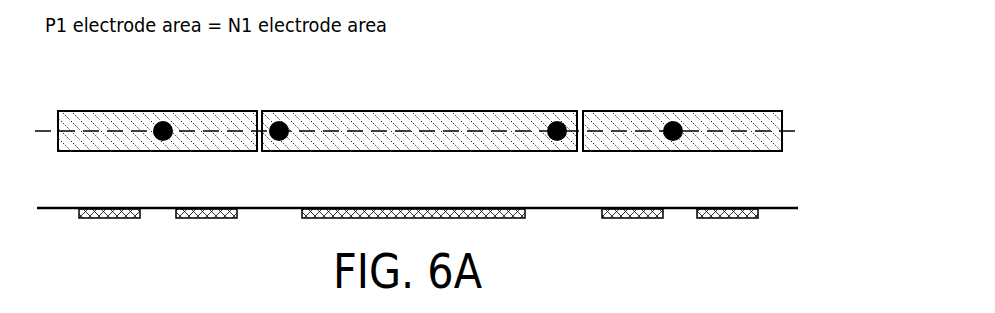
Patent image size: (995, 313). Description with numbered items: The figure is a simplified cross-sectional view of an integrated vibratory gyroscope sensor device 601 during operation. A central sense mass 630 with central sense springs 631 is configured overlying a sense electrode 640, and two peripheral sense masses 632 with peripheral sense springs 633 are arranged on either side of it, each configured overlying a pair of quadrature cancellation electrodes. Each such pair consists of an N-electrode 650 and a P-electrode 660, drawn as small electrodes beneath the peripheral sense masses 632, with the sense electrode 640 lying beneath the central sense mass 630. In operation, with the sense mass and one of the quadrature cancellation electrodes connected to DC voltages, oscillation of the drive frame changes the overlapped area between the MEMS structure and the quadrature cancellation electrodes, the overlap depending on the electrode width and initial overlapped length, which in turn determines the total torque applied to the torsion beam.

The electrode arrangement 601 is at (696, 27).
The central sense mass 630 is at (393, 110).
The central sense springs 631 is at (279, 122).
The peripheral sense masses 632 is at (70, 110).
The peripheral sense springs 633 is at (163, 122).
The sense electrode 640 is at (413, 207).
The N-electrode 650 is at (108, 207).
The P-electrode 660 is at (203, 207).